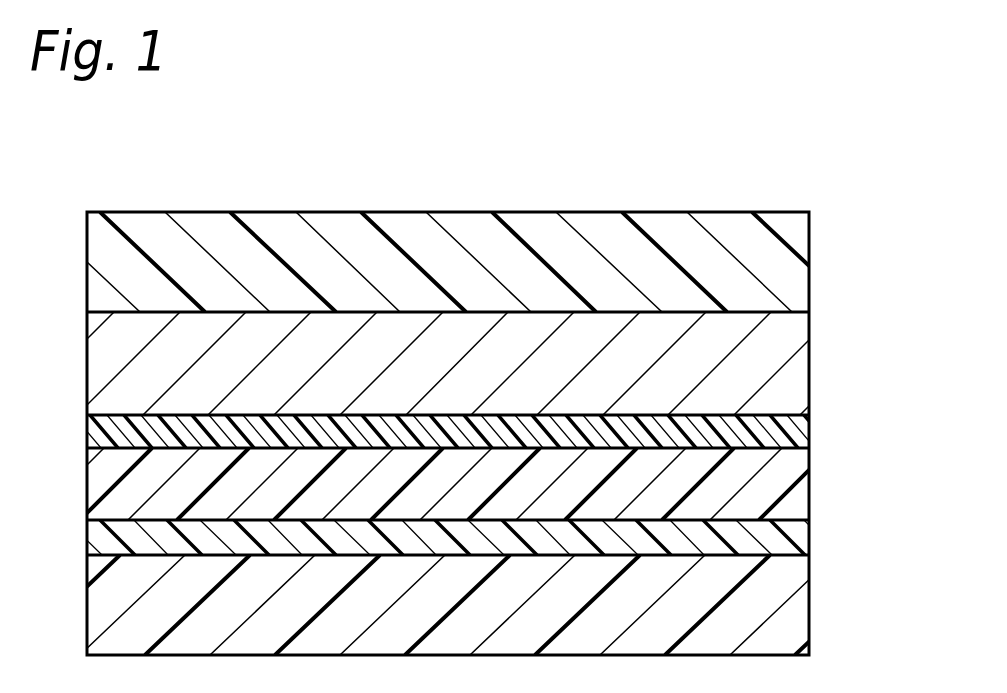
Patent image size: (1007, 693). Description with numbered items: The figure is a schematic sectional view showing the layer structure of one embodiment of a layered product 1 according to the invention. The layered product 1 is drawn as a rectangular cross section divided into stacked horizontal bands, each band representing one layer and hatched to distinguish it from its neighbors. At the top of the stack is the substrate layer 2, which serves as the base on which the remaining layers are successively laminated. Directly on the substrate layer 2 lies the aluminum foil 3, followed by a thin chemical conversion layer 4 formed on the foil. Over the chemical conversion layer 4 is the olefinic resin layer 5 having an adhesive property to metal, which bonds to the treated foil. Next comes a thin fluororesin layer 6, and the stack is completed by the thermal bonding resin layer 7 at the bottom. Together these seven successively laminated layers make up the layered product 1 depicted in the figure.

The layered product 1 is at (598, 210).
The substrate layer 2 is at (788, 273).
The aluminum foil 3 is at (770, 358).
The chemical conversion layer 4 is at (787, 435).
The olefinic resin layer having an adhesive property to metal 5 is at (783, 488).
The fluororesin layer 6 is at (783, 537).
The thermal bonding resin layer 7 is at (773, 602).